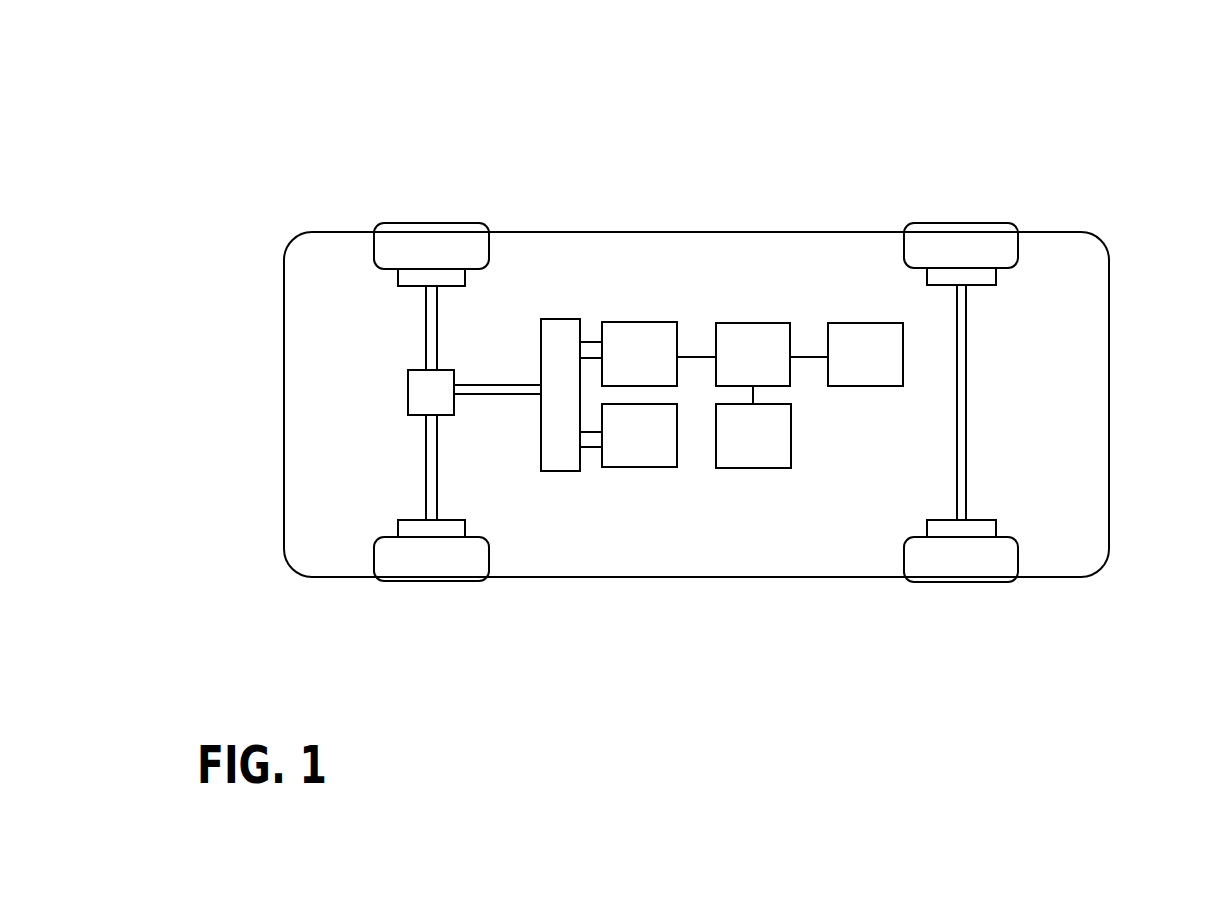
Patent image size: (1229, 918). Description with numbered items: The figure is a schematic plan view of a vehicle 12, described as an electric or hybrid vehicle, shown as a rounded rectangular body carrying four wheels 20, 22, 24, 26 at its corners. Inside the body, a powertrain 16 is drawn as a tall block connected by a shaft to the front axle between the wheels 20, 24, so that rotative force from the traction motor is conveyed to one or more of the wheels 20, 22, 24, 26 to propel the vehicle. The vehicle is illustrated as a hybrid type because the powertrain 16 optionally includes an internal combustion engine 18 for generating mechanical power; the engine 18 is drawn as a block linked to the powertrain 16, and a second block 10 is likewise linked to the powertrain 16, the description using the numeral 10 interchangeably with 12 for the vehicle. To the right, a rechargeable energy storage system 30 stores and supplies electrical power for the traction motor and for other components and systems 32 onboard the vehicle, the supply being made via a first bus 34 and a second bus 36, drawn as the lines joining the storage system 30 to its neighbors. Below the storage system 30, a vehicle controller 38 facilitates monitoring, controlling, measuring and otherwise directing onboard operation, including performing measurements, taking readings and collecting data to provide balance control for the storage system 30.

The vehicle 12 is at (1117, 142).
The wheel 20 is at (445, 222).
The wheel 22 is at (980, 222).
The wheel 24 is at (445, 582).
The wheel 26 is at (962, 582).
The powertrain 16 is at (517, 335).
The vehicle 10 is at (639, 354).
The internal combustion engine 18 is at (639, 435).
The rechargeable energy storage system 30 is at (753, 363).
The other components, systems 32 is at (865, 354).
The vehicle controller 38 is at (753, 436).
The first bus 34 is at (695, 355).
The second bus 36 is at (806, 355).